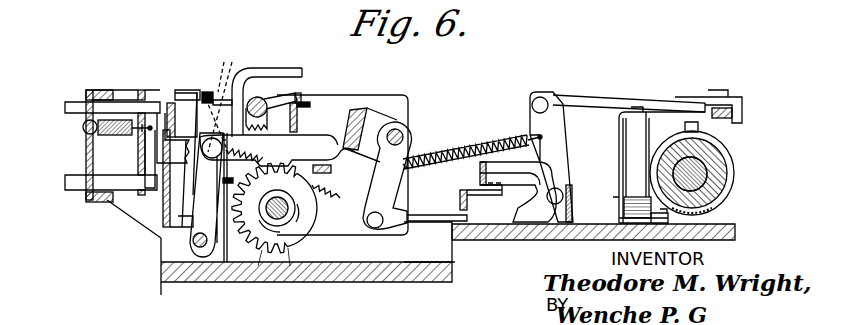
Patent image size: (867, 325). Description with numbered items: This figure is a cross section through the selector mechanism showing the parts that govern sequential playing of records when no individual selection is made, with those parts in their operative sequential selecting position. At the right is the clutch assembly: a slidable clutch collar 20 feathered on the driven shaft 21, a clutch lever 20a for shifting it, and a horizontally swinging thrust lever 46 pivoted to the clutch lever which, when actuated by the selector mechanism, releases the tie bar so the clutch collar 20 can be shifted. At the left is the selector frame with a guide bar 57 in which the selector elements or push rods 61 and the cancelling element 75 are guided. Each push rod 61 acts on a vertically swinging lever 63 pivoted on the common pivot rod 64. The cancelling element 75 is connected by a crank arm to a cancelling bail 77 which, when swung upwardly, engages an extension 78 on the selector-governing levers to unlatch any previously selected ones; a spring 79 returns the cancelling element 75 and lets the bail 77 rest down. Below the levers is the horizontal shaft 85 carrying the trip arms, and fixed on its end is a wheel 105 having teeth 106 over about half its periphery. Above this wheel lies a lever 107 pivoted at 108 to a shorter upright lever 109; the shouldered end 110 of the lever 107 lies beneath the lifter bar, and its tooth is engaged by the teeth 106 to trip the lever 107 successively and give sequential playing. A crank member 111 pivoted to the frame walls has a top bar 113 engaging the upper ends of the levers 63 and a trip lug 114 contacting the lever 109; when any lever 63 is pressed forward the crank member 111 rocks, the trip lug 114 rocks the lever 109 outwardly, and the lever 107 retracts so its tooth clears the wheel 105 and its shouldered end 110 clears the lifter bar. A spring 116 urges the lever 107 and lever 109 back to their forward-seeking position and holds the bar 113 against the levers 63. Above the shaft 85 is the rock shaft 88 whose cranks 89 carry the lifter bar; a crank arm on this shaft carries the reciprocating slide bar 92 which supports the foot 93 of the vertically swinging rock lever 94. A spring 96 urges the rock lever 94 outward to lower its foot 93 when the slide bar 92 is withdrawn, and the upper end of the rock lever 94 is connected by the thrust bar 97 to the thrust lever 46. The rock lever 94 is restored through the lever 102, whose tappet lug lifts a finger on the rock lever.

The clutch collar 20 is at (718, 158).
The clutch lever 20a is at (657, 120).
The driven shaft 21 is at (712, 186).
The thrust lever 46 is at (742, 98).
The guide bar 57 is at (87, 198).
The selector element 61 is at (65, 181).
The vertically-swinging lever 63 is at (180, 93).
The pivot rod 64 is at (197, 247).
The cancelling element 75 is at (65, 107).
The cancelling bail 77 is at (300, 92).
The extension 78 is at (275, 68).
The spring 79 is at (108, 137).
The selector-tripping shaft 85 is at (283, 212).
The rock shaft 88 is at (402, 134).
The cranks 89 is at (382, 120).
The slide bar 92 is at (364, 178).
The foot 93 is at (522, 232).
The rock lever 94 is at (550, 143).
The spring 96 is at (472, 150).
The thrust bar 97 is at (600, 94).
The lever 102 is at (460, 199).
The toothed wheel 105 is at (290, 240).
The teeth 106 is at (250, 246).
The lever 107 is at (312, 142).
The pivot 108 is at (206, 153).
The upright lever 109 is at (207, 211).
The shouldered end 110 is at (333, 168).
The crank member 111 is at (230, 102).
The top bar 113 is at (205, 92).
The trip lug 114 is at (225, 263).
The spring 116 is at (322, 200).